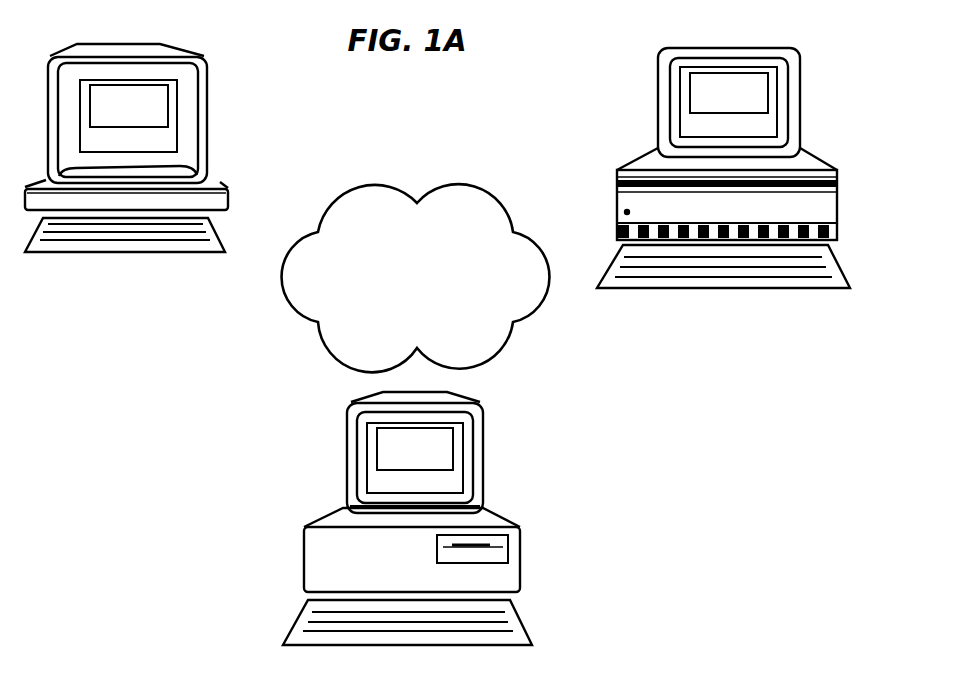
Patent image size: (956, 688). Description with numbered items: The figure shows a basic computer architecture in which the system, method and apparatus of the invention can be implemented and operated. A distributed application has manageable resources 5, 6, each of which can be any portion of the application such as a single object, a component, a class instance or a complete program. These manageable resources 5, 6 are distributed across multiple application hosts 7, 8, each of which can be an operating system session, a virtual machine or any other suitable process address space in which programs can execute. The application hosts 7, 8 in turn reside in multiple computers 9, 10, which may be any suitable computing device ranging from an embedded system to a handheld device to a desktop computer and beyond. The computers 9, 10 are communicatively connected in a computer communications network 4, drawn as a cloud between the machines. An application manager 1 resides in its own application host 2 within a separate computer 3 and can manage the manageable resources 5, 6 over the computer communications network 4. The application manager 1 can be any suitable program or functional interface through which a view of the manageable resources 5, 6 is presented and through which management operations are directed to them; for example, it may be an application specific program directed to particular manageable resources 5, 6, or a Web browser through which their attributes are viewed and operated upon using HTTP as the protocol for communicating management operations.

The application manager 1 is at (375, 450).
The application host 2 is at (409, 448).
The computer 3 is at (409, 439).
The computer communications network 4 is at (293, 313).
The manageable resource 5 is at (168, 95).
The manageable resource 6 is at (690, 82).
The application host 7 is at (156, 102).
The application host 8 is at (686, 86).
The computer 9 is at (207, 179).
The computer 10 is at (617, 207).